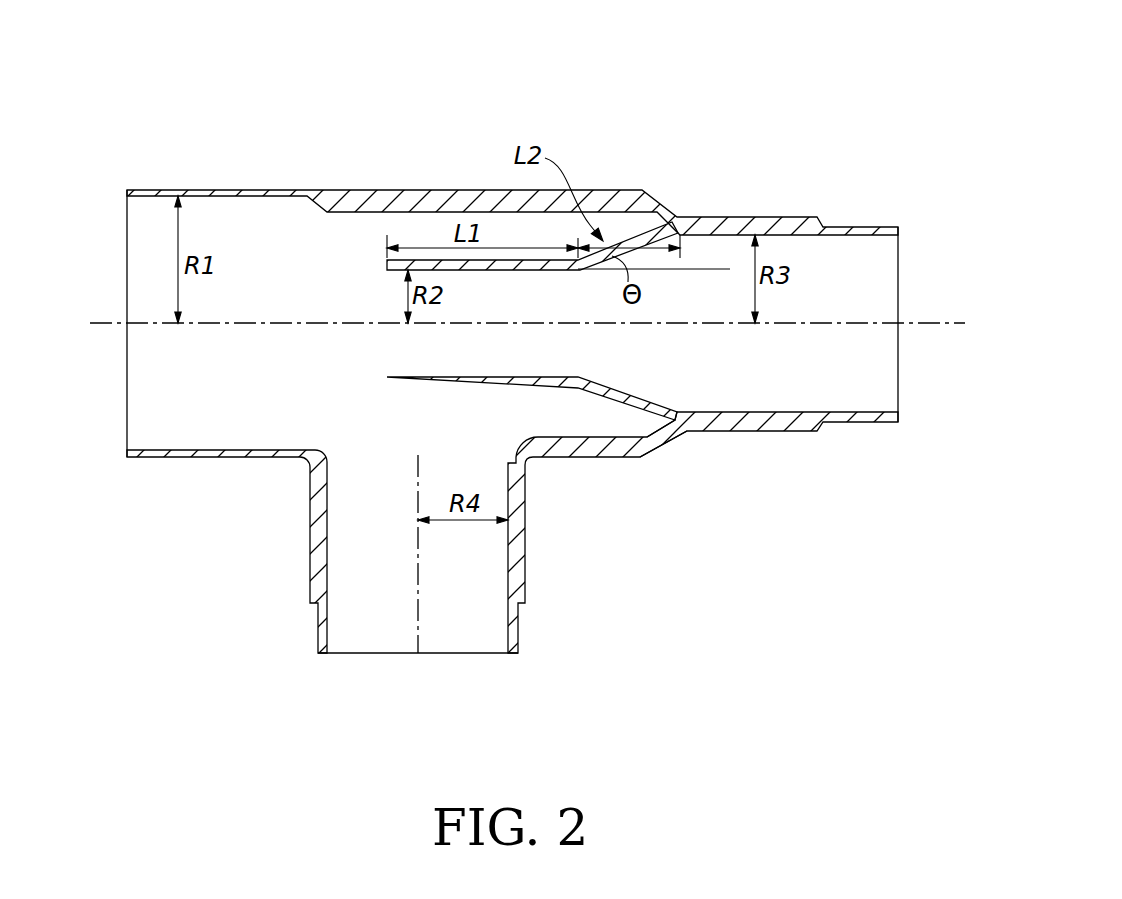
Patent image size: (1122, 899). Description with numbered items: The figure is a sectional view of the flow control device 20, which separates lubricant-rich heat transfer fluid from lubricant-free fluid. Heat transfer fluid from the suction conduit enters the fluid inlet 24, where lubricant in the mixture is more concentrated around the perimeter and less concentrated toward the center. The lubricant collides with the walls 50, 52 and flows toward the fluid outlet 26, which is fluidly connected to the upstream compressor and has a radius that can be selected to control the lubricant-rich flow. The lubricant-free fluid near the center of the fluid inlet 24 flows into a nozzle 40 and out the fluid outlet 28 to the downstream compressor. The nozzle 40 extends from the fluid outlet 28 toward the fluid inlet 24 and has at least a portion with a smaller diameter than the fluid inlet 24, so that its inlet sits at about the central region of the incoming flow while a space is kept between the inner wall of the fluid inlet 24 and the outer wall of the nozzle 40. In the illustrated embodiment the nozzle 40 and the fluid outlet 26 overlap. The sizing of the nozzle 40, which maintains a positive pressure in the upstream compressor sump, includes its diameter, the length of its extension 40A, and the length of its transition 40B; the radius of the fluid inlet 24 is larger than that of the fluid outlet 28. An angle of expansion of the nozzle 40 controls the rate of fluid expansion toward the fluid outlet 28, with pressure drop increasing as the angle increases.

The flow control device 20 is at (800, 58).
The fluid inlet 24 is at (115, 388).
The fluid outlet 26 is at (360, 660).
The fluid outlet 28 is at (840, 194).
The nozzle 40 is at (542, 400).
The extension 40A is at (376, 390).
The transition 40B is at (672, 389).
The wall 50 is at (630, 425).
The wall 52 is at (640, 222).